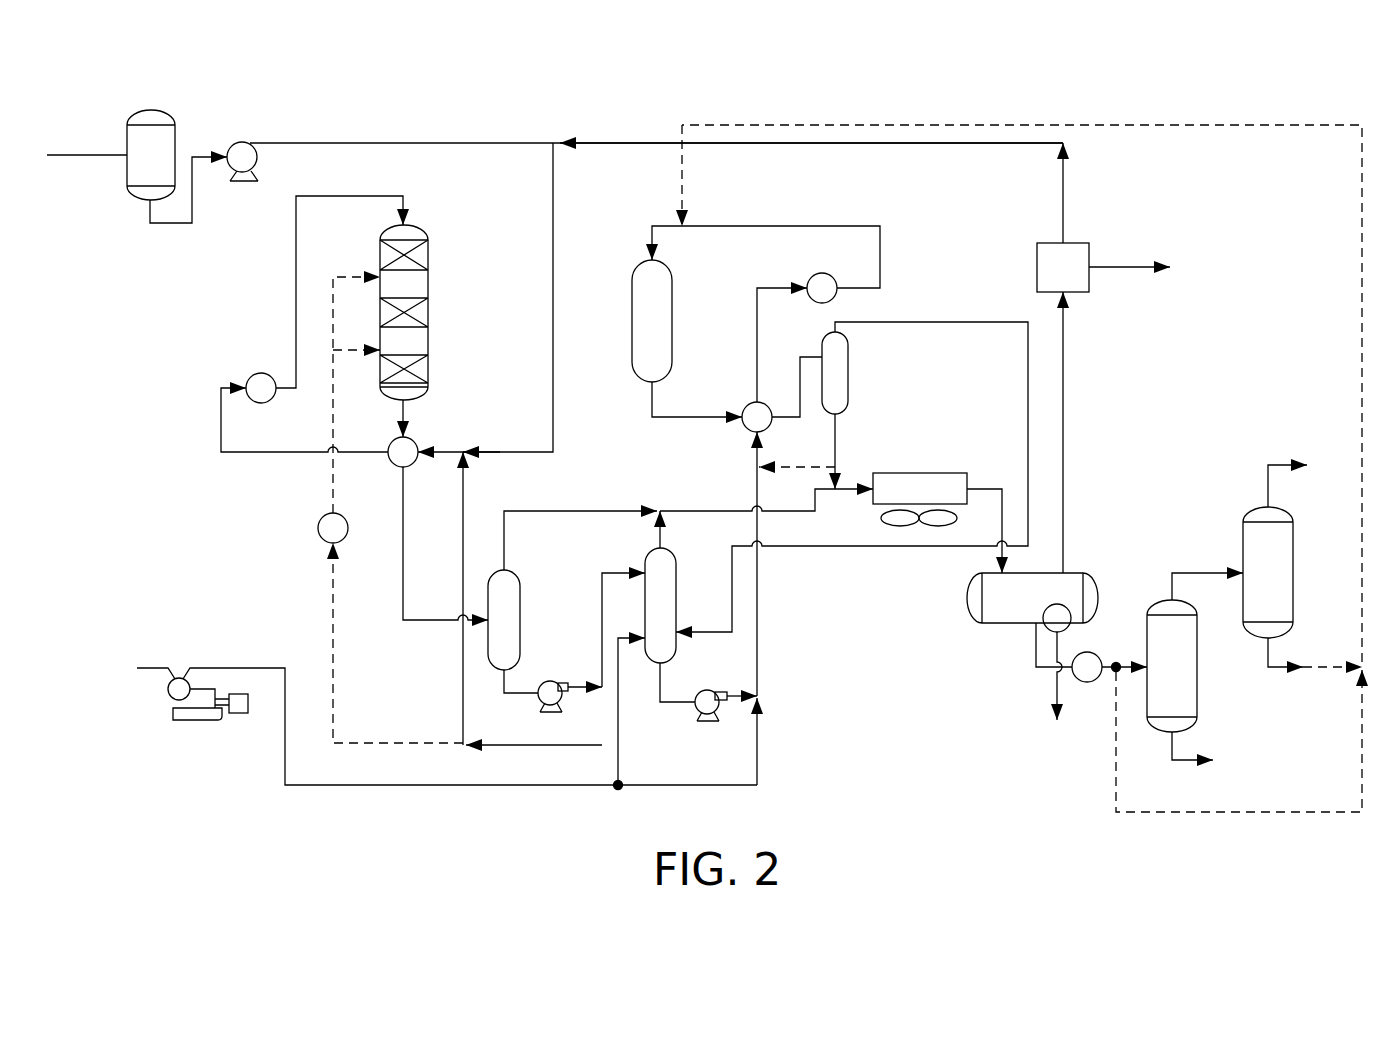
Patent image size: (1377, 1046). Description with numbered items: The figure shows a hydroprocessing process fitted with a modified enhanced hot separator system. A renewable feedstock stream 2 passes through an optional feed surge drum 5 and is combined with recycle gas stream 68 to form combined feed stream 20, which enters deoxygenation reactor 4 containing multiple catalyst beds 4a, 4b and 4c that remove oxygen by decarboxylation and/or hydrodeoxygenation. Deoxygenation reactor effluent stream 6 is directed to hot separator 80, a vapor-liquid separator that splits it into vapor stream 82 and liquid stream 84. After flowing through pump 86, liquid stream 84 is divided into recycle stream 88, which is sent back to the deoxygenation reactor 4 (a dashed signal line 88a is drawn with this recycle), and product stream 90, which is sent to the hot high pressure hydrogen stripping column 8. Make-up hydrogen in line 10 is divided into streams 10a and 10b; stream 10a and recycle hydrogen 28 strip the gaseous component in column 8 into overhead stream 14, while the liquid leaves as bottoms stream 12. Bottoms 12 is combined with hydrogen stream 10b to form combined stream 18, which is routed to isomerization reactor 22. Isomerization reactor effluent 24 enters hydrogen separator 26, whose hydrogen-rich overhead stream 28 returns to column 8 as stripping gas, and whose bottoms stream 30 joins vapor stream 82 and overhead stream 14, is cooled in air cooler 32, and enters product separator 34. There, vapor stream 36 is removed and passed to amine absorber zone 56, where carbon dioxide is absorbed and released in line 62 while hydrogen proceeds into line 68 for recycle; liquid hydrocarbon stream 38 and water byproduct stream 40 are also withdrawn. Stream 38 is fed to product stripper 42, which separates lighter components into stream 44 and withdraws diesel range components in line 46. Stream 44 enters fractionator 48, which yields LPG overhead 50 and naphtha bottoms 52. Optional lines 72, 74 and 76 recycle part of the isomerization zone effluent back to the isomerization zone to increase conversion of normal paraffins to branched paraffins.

The feedstock stream 2 is at (107, 155).
The feed surge drum 5 is at (150, 110).
The deoxygenation reactor 4 is at (435, 298).
The bed 4a is at (428, 255).
The bed 4b is at (428, 312).
The bed 4c is at (428, 369).
The deoxygenation reactor effluent stream 6 is at (405, 411).
The hot high pressure hydrogen stripping column 8 is at (676, 560).
The make up hydrogen line 10 is at (226, 668).
The make up hydrogen stream 10a is at (618, 745).
The hydrogen stream 10b is at (731, 785).
The hot high pressure hydrogen stripping column bottoms stream 12 is at (662, 575).
The hot high pressure hydrogen stripper overhead stream 14 is at (666, 530).
The combined stream 18 is at (768, 226).
The combined feed stream 20 is at (296, 278).
The isomerization reactor 22 is at (632, 290).
The isomerization reactor effluent 24 is at (652, 405).
The hydrogen separator 26 is at (850, 373).
The overhead stream 28 is at (713, 630).
The bottoms stream 30 is at (835, 433).
The air cooler 32 is at (922, 473).
The product separator 34 is at (1076, 573).
The vapor stream 36 is at (1063, 390).
The liquid hydrocarbon stream 38 is at (1036, 655).
The water byproduct stream 40 is at (1057, 690).
The product stripper 42 is at (1197, 665).
The stream 44 is at (1198, 573).
The line 46 is at (1172, 760).
The fractionator 48 is at (1291, 507).
The overhead 50 is at (1280, 465).
The naphtha bottoms 52 is at (1273, 667).
The amine absorber zone 56 is at (1048, 243).
The line 62 is at (1135, 267).
The recycle gas stream 68 is at (1063, 190).
The optional line 72 is at (798, 465).
The optional line 74 is at (1250, 812).
The optional line 76 is at (1318, 667).
The hot separator 80 is at (520, 586).
The vapor stream 82 is at (554, 511).
The liquid stream 84 is at (504, 693).
The pump 86 is at (555, 682).
The recycle stream 88 is at (463, 538).
The control signal line 88a is at (333, 424).
The product stream 90 is at (602, 627).